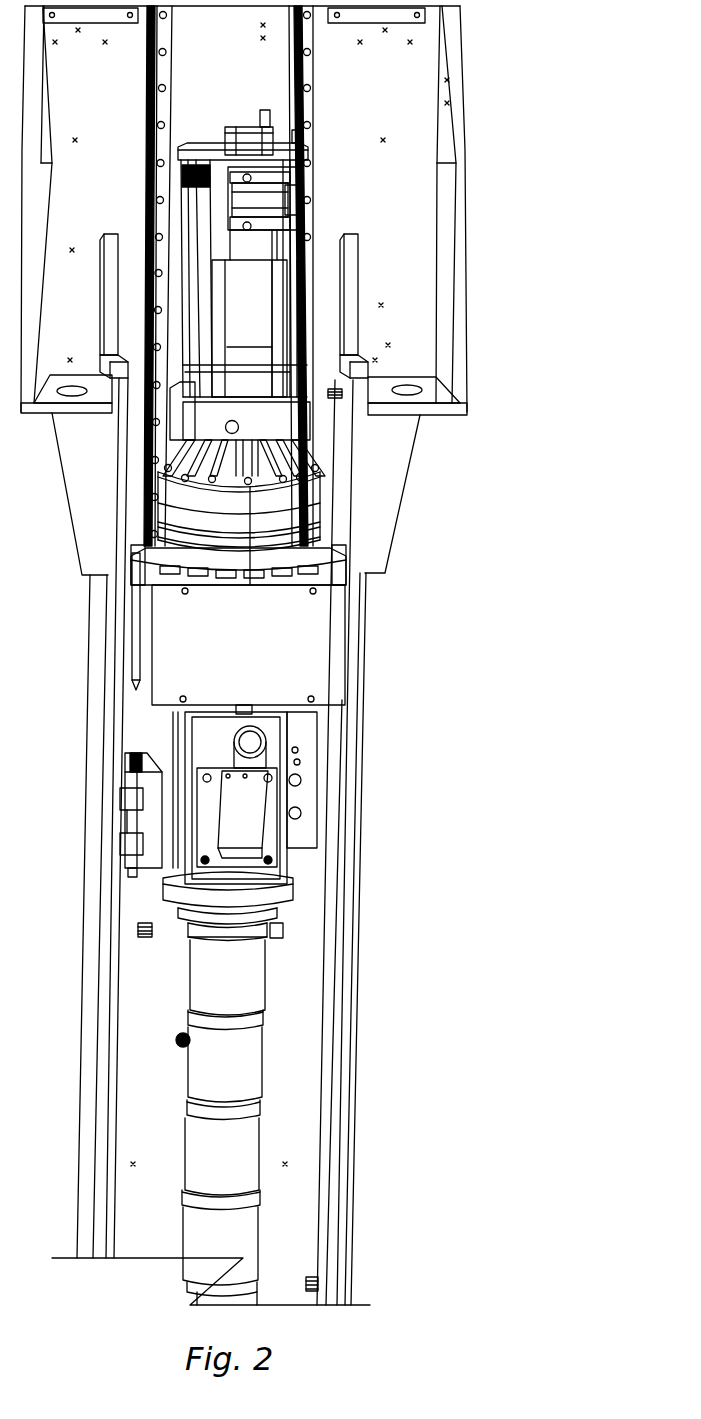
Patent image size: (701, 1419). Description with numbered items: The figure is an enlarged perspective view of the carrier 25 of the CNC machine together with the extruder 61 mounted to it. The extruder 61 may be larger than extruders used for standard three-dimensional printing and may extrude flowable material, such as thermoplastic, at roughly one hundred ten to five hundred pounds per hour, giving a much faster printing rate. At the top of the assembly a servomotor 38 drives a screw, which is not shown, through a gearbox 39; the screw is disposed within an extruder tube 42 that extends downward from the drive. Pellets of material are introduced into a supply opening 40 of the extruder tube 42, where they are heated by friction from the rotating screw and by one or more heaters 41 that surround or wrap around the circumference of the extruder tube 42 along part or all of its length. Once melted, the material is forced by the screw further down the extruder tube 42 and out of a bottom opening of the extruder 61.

The carrier 25 is at (520, 170).
The servomotor 38 is at (318, 241).
The gearbox 39 is at (290, 420).
The supply opening 40 is at (253, 742).
The extruder 61 is at (298, 833).
The heaters 41 is at (250, 983).
The extruder tube 42 is at (260, 1103).